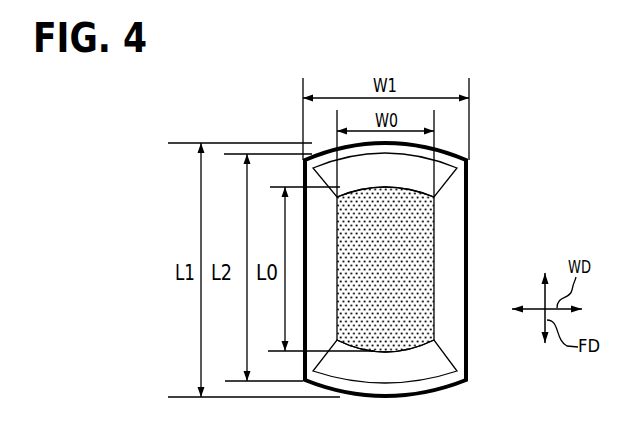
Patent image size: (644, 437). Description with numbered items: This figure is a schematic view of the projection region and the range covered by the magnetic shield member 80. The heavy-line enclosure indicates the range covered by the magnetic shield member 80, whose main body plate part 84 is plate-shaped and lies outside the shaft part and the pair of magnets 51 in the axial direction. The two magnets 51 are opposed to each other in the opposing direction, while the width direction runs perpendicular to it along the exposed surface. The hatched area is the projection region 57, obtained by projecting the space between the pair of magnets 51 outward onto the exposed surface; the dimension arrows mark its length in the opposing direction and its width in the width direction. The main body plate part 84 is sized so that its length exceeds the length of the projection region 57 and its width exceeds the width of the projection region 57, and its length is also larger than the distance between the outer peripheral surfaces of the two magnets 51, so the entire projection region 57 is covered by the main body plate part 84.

The magnet 51 is at (447, 185).
The projection region 57 is at (434, 266).
The magnetic shield member 80 is at (430, 269).
The main body plate part 84 is at (468, 228).